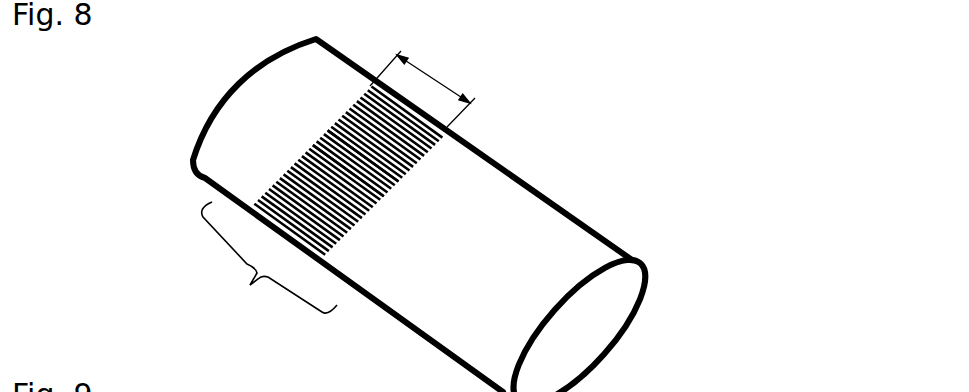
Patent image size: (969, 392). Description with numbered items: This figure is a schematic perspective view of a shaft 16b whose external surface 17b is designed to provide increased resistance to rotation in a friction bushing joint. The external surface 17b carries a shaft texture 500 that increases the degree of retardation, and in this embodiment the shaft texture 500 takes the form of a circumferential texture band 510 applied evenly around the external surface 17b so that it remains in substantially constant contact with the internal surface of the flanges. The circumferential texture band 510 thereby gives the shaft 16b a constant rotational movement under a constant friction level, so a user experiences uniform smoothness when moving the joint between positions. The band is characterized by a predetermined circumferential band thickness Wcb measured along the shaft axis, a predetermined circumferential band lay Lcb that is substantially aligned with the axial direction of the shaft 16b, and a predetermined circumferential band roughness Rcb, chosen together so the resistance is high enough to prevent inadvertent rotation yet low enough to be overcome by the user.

The circumferential texture band 510 is at (320, 141).
The shaft texture 500 is at (267, 260).
The external surface 17b is at (473, 207).
The shaft 16b is at (582, 341).
The circumferential band thickness Wcb is at (422, 72).
The circumferential band lay Lcb is at (373, 131).
The circumferential band roughness Rcb is at (352, 153).